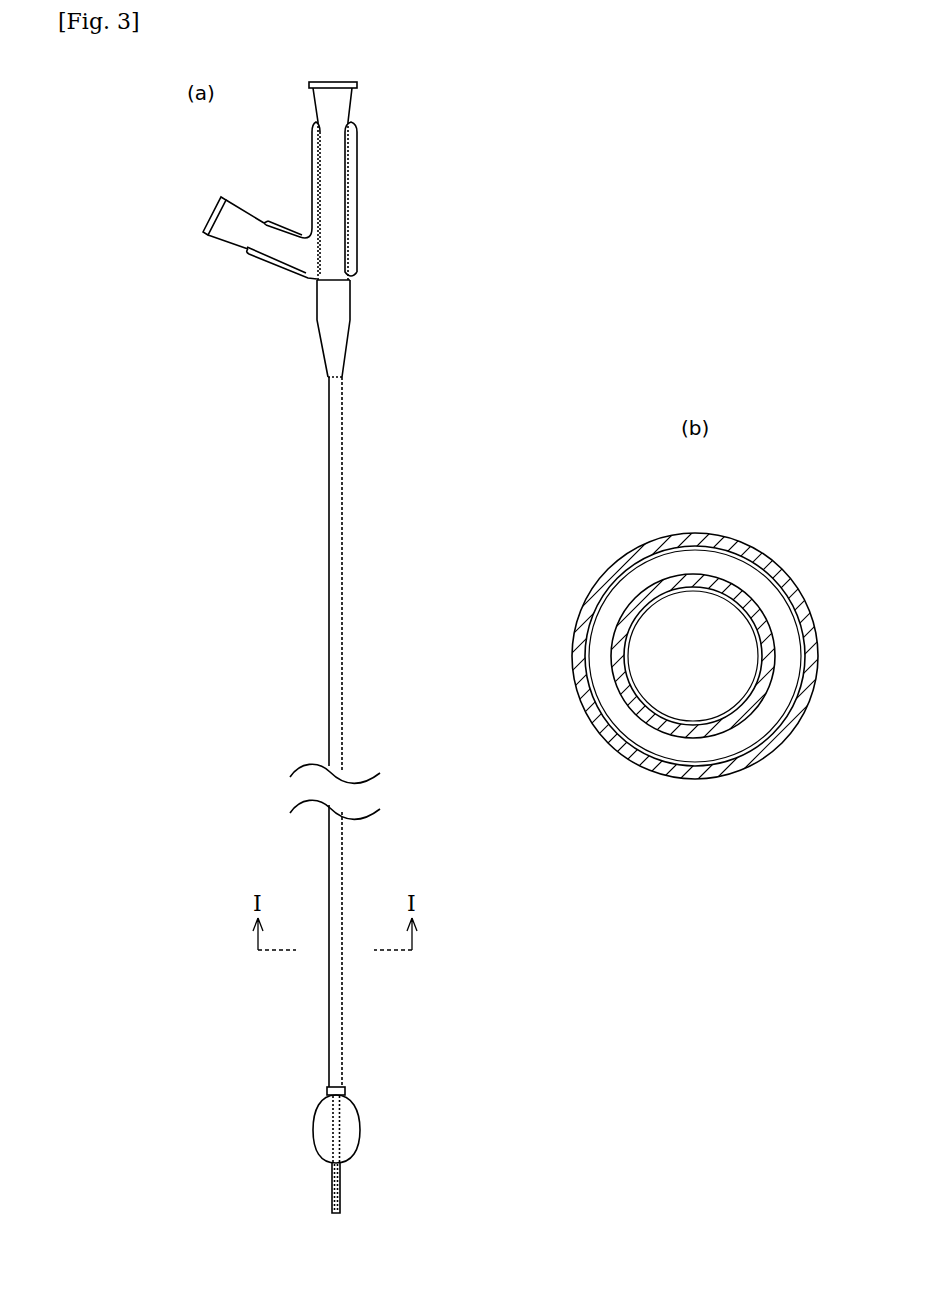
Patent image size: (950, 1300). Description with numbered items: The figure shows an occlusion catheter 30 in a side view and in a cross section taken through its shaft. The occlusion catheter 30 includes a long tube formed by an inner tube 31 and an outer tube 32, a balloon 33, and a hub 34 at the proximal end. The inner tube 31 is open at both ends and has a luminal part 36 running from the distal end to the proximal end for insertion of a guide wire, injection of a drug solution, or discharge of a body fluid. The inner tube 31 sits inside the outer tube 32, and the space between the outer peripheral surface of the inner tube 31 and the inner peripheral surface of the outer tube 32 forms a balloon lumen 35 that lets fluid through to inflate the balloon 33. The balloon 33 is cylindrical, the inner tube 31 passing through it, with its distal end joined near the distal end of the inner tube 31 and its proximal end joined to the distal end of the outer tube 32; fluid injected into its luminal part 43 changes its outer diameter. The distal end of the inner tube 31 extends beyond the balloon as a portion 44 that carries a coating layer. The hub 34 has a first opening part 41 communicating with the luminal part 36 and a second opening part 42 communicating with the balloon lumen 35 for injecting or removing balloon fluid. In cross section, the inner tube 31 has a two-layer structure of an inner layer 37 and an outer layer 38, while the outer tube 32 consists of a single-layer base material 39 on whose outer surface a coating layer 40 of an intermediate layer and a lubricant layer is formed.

The occlusion catheter 30 is at (392, 221).
The inner tube 31 is at (340, 1190).
The outer tube 32 is at (328, 618).
The balloon 33 is at (347, 1106).
The hub 34 is at (347, 307).
The balloon lumen 35 is at (598, 658).
The luminal part 36 is at (646, 678).
The inner layer 37 is at (753, 699).
The outer layer 38 is at (739, 729).
The base material 39 is at (641, 556).
The coating layer 40 is at (700, 535).
The first opening part 41 is at (346, 80).
The second opening part 42 is at (207, 215).
The luminal part 43 is at (363, 1144).
The portion not covered by the balloon and the outer tube 44 is at (322, 1175).